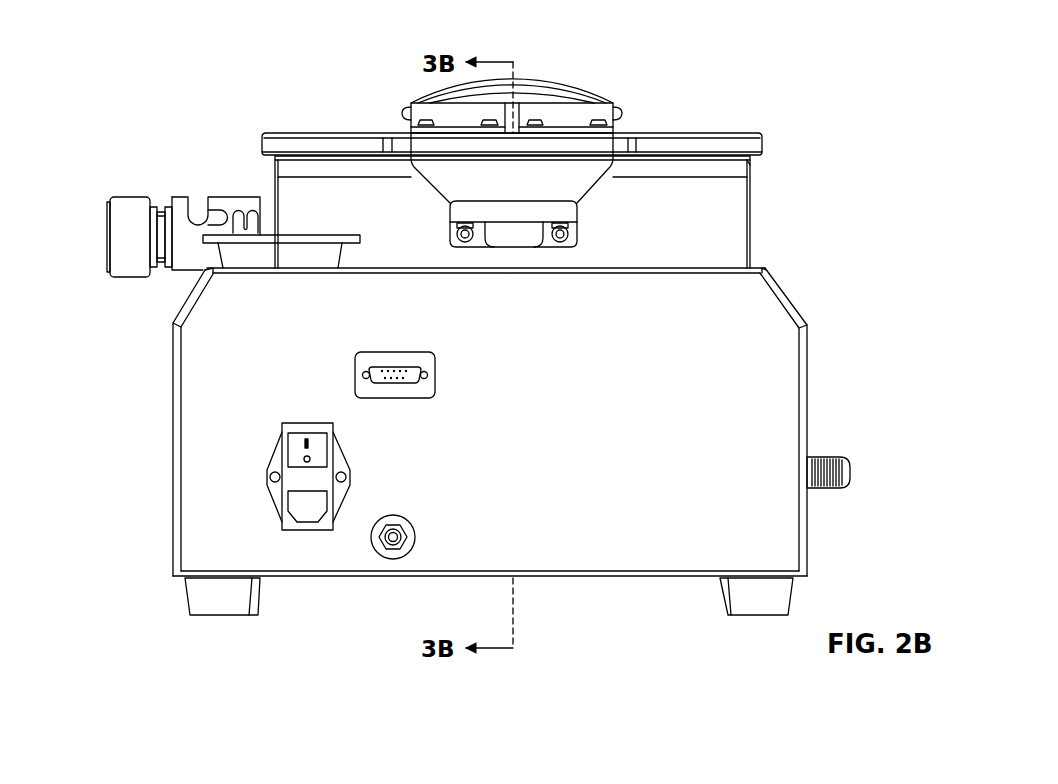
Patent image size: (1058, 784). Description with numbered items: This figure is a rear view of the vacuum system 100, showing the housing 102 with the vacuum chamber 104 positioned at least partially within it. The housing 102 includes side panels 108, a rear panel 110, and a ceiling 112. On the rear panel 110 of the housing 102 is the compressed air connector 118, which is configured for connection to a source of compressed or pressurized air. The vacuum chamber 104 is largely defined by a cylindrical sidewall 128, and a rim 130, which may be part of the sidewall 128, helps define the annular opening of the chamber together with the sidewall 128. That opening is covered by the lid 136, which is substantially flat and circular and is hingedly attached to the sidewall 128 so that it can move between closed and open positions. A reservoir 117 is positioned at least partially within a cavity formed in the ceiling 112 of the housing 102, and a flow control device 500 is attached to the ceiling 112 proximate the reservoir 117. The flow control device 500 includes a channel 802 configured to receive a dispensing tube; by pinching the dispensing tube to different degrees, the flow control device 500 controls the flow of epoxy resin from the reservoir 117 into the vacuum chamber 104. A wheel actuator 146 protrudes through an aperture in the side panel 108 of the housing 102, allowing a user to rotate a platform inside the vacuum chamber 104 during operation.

The vacuum system 100 is at (178, 36).
The housing 102 is at (812, 304).
The vacuum chamber 104 is at (659, 127).
The side panels 108 is at (172, 518).
The rear panel 110 is at (620, 565).
The ceiling 112 is at (764, 268).
The reservoir 117 is at (279, 432).
The compressed air connector 118 is at (414, 540).
The cylindrical sidewall 128 is at (288, 188).
The rim 130 is at (742, 168).
The lid 136 is at (320, 131).
The wheel actuator 146 is at (851, 472).
The flow control device 500 is at (103, 228).
The channel 802 is at (197, 194).